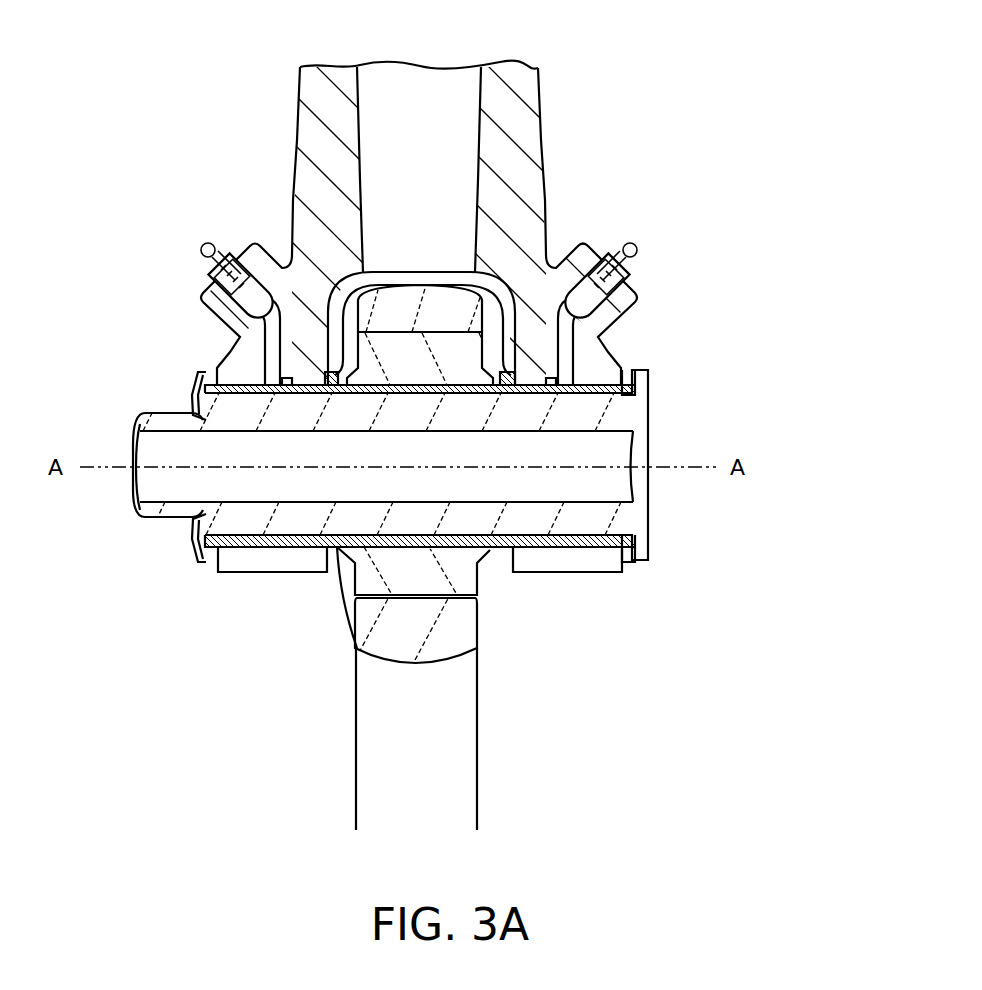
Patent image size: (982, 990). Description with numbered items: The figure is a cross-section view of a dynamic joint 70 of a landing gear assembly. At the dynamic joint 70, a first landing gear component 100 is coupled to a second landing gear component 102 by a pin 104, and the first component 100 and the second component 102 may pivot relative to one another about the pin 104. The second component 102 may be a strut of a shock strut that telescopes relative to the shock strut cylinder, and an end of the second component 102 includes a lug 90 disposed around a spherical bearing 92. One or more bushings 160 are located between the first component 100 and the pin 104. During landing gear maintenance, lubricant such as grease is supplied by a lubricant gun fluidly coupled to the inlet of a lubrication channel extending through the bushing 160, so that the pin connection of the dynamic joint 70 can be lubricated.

The dynamic joint 70 is at (668, 78).
The first landing gear component 100 is at (527, 152).
The pin 104 is at (632, 413).
The bushing 160 is at (630, 536).
The spherical bearing 92 is at (468, 578).
The lug 90 is at (463, 634).
The second landing gear component 102 is at (358, 760).